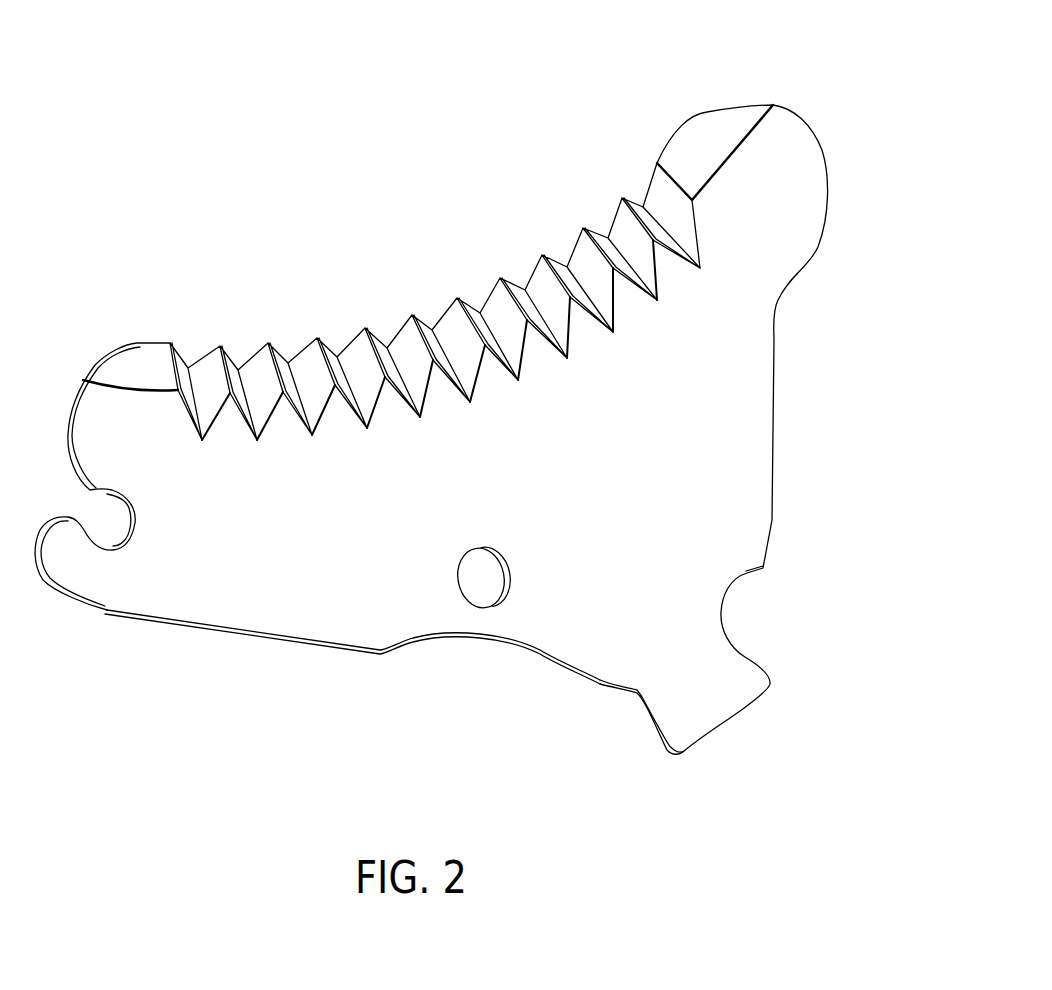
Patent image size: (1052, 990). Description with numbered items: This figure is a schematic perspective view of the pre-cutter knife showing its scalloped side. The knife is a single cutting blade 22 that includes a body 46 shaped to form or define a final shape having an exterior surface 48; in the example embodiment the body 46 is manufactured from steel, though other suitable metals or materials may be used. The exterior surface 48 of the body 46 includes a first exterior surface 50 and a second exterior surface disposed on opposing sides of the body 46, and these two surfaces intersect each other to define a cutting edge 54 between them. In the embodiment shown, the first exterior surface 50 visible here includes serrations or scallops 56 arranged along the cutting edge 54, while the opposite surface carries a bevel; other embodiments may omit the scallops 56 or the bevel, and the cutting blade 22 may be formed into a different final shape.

The cutting blade 22 is at (210, 68).
The body 46 is at (700, 422).
The exterior surface 48 is at (605, 499).
The first exterior surface 50 is at (248, 523).
The cutting edge 54 is at (488, 293).
The scallops 56 is at (304, 383).